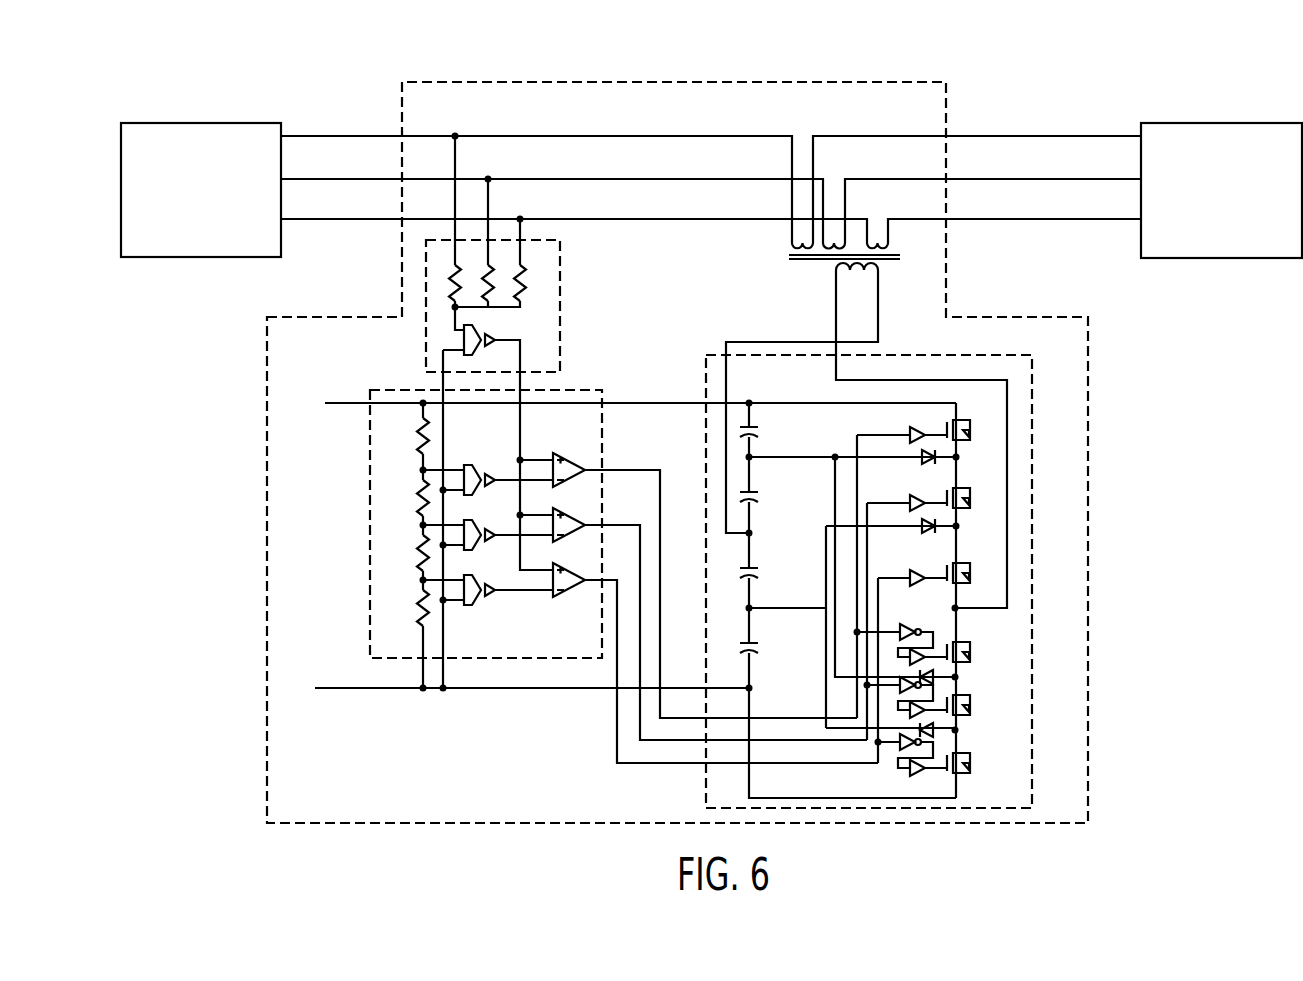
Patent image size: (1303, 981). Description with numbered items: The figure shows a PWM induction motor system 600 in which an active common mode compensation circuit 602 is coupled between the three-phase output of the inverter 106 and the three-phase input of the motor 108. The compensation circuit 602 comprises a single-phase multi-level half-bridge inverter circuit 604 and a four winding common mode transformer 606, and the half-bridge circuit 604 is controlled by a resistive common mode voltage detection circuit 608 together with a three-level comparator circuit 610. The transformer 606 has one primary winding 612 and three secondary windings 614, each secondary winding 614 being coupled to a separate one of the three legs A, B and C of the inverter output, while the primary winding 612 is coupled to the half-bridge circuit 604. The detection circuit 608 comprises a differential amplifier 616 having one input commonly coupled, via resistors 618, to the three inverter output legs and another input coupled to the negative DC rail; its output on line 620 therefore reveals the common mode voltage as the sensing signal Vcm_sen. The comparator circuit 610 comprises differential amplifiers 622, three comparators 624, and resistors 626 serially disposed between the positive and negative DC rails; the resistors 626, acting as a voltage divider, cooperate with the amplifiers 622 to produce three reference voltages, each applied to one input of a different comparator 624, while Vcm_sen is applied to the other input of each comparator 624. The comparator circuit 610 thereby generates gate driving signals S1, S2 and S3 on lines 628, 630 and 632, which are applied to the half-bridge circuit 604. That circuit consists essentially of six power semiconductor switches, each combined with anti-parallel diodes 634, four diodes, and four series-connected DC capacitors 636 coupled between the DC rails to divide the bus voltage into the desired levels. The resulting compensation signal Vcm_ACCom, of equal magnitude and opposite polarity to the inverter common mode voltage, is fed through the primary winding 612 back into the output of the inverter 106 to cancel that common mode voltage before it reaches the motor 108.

The inverter 106 is at (182, 123).
The motor 108 is at (1217, 123).
The PWM induction motor system 600 is at (657, 26).
The active common mode compensation circuit 602 is at (1088, 515).
The single-phase multi-level half-bridge inverter (SPMHI) circuit 604 is at (836, 567).
The common mode transformer 606 is at (865, 415).
The common mode voltage detection circuit 608 is at (530, 456).
The three-level comparator circuit 610 is at (619, 555).
The primary winding 612 is at (880, 270).
The secondary windings 614 is at (800, 248).
The differential amplifier 616 is at (481, 328).
The resistors 618 is at (522, 264).
The line 620 is at (522, 358).
The differential amplifiers 622 is at (493, 425).
The comparators 624 is at (573, 512).
The resistors 626 is at (420, 500).
The line 628 is at (591, 578).
The line 630 is at (649, 488).
The line 632 is at (647, 468).
The anti-parallel diodes 634 is at (968, 557).
The capacitors 636 is at (752, 487).